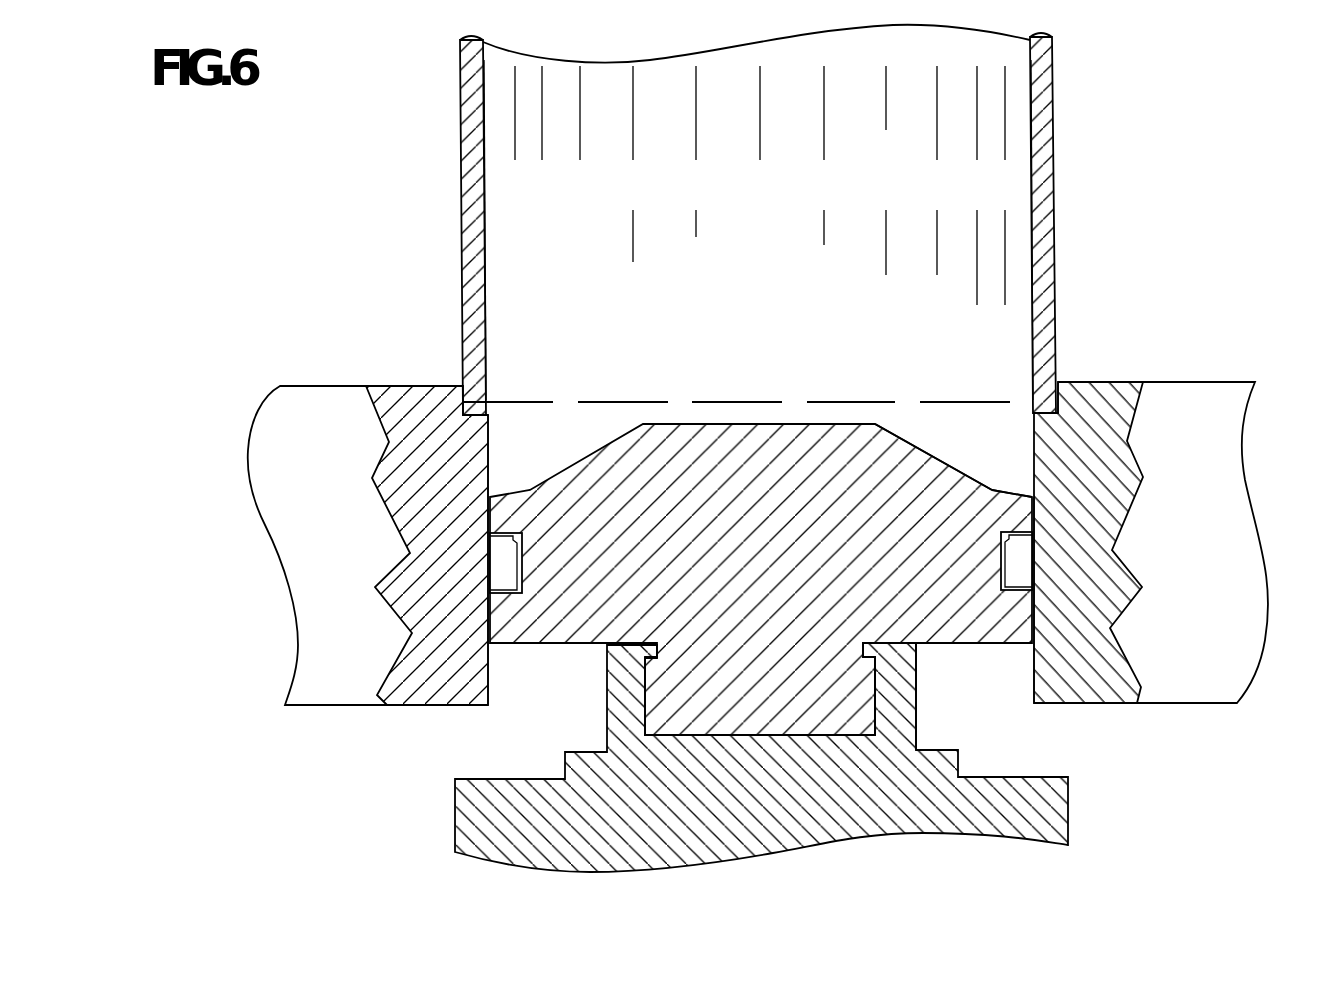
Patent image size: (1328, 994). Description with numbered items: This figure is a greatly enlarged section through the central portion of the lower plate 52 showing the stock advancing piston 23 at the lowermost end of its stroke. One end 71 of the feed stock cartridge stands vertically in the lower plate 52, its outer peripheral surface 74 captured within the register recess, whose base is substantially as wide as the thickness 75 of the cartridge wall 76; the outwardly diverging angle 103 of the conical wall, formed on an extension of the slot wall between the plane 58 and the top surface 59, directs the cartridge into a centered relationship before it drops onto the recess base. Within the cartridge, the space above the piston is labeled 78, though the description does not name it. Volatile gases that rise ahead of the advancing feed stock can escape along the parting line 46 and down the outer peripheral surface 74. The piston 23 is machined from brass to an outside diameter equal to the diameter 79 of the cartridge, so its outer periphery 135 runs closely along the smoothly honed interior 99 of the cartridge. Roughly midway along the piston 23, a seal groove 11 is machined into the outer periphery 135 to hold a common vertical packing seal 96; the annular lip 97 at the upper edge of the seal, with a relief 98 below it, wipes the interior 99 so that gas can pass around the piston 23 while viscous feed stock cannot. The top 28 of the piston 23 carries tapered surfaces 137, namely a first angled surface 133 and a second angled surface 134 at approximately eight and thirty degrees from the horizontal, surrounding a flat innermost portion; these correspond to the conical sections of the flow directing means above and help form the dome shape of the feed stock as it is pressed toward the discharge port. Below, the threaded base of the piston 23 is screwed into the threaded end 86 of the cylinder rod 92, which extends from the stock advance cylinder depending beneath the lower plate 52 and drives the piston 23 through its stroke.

The seal groove 11 is at (523, 557).
The stock advancing piston 23 is at (761, 509).
The top of piston 28 is at (826, 424).
The parting line 46 is at (488, 463).
The lower plate 52 is at (1185, 447).
The plane 58 is at (748, 402).
The top surface 59 is at (1145, 383).
The one end of cartridge 71 is at (515, 435).
The outer peripheral surface 74 is at (462, 182).
The thickness of cartridge wall 75 is at (990, 236).
The cartridge wall 76 is at (472, 242).
The cylinder chamber 78 is at (654, 116).
The diameter of cartridge 79 is at (485, 188).
The end of cylinder rod 86 is at (887, 637).
The cylinder rod 92 is at (761, 748).
The packing seal 96 is at (1015, 558).
The annular lip 97 is at (1003, 528).
The relief 98 is at (1034, 561).
The interior of cartridge 99 is at (1031, 172).
The outwardly diverging angle 103 is at (1058, 382).
The first angled surface 133 is at (1018, 490).
The second angled surface 134 is at (906, 441).
The outer periphery of piston 135 is at (488, 522).
The tapered surfaces 137 is at (622, 413).